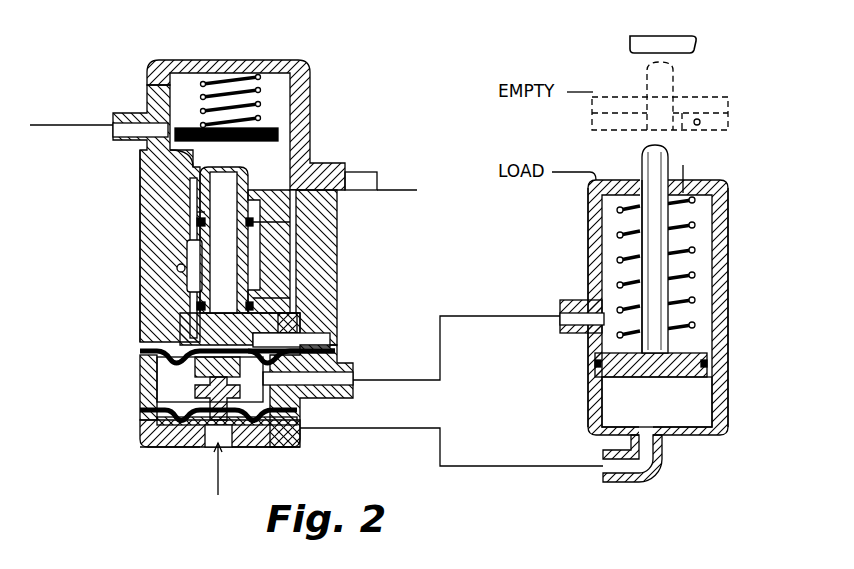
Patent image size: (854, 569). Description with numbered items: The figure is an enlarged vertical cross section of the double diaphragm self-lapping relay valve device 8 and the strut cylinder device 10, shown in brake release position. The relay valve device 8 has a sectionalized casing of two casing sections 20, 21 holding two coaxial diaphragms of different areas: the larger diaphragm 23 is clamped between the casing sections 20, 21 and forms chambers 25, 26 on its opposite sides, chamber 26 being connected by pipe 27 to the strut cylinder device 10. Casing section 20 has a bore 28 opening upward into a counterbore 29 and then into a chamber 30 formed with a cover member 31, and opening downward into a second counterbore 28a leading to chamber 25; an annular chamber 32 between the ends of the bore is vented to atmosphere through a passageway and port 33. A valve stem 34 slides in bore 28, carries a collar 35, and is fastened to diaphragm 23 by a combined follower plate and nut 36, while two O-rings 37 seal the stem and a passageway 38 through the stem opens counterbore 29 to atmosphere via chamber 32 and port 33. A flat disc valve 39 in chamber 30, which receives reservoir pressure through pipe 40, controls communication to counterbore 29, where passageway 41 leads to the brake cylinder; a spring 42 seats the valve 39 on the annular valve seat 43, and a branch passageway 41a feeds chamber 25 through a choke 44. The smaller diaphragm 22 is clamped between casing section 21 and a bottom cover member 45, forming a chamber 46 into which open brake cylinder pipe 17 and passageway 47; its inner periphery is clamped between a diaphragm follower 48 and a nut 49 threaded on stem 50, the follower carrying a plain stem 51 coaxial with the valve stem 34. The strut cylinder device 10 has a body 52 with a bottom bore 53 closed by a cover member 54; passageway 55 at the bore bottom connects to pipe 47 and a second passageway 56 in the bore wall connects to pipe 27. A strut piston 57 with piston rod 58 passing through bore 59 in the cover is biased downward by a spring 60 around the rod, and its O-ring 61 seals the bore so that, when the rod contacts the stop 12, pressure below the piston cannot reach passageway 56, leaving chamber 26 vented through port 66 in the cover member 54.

The double diaphragm self-lapping relay valve device 8 is at (140, 262).
The strut cylinder device 10 is at (728, 125).
The stop 12 is at (690, 42).
The brake cylinder passageway and pipe 17 is at (218, 463).
The casing section 20 is at (178, 300).
The casing section 21 is at (150, 360).
The smaller diaphragm 22 is at (180, 442).
The larger diaphragm 23 is at (300, 353).
The chamber 25 is at (165, 351).
The chamber 26 is at (195, 385).
The pipe and passageway 27 is at (353, 378).
The bore 28 is at (199, 222).
The second coaxial counterbore 28a is at (190, 330).
The coaxial counterbore 29 is at (222, 178).
The chamber 30 is at (180, 100).
The cover member 31 is at (152, 65).
The annular chamber 32 is at (190, 255).
The passageway and port 33 is at (177, 268).
The valve stem 34 is at (200, 215).
The collar 35 is at (300, 340).
The combined diaphragm follower plate and nut 36 is at (165, 375).
The O-ring 37 is at (253, 222).
The passageway 38 is at (193, 195).
The flat disc valve 39 is at (278, 134).
The passageway and pipe 40 is at (113, 120).
The passageway 41 is at (367, 177).
The branch passageway 41a is at (296, 260).
The spring 42 is at (262, 108).
The annular valve seat 43 is at (172, 160).
The choke 44 is at (297, 320).
The bottom cover member 45 is at (150, 437).
The chamber 46 is at (170, 420).
The passageway and pipe 47 is at (290, 430).
The diaphragm follower 48 is at (160, 412).
The nut 49 is at (205, 442).
The screw-threaded stem 50 is at (245, 442).
The non-screw-threaded stem 51 is at (228, 390).
The body 52 is at (590, 400).
The bottom bore 53 is at (705, 410).
The cover member 54 is at (720, 106).
The passageway 55 is at (645, 464).
The second passageway 56 is at (578, 312).
The strut piston 57 is at (690, 361).
The piston rod 58 is at (650, 155).
The bore 59 is at (645, 178).
The spring 60 is at (620, 232).
The O-ring 61 is at (597, 364).
The port 66 is at (683, 168).